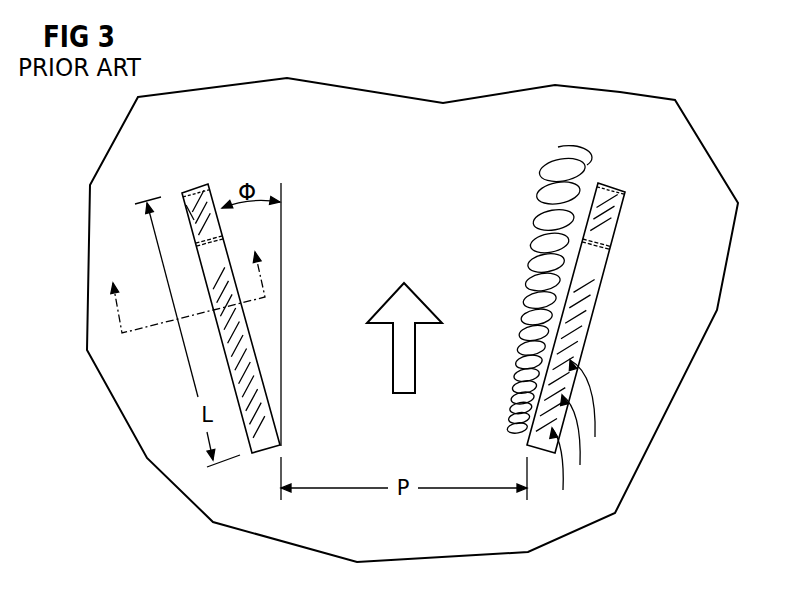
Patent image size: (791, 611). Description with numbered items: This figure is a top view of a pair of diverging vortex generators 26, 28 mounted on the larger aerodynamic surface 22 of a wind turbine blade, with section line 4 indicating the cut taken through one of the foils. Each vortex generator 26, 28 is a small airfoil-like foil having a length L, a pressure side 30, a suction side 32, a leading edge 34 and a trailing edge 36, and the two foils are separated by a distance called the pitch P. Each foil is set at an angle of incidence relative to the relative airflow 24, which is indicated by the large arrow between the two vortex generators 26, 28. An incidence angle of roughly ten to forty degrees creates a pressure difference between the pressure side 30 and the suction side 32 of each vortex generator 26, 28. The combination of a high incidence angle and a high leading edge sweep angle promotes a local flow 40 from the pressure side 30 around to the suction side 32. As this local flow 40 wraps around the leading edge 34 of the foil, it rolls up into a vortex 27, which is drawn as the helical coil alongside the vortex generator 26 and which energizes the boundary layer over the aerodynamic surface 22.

The larger aerodynamic surface 22 is at (354, 178).
The relative airflow 24 is at (412, 304).
The vortex generator 26 is at (627, 171).
The vortex 27 is at (535, 219).
The vortex generator 28 is at (181, 173).
The pressure side 30 is at (230, 377).
The suction side 32 is at (220, 277).
The leading edge 34 is at (240, 348).
The trailing edge 36 is at (199, 185).
The local flow 40 is at (200, 220).
The section line 4- 4 is at (183, 281).